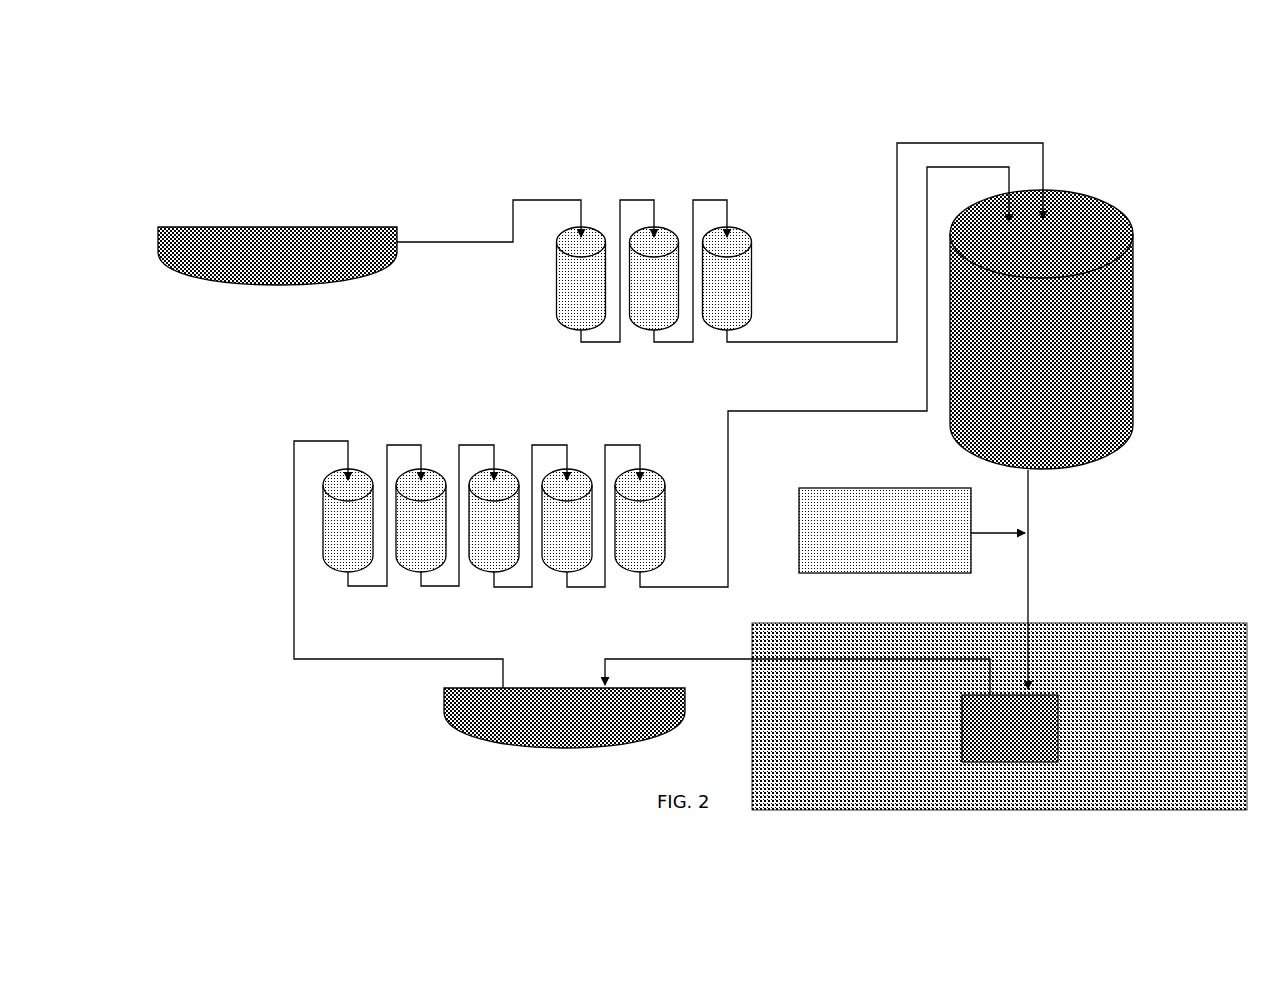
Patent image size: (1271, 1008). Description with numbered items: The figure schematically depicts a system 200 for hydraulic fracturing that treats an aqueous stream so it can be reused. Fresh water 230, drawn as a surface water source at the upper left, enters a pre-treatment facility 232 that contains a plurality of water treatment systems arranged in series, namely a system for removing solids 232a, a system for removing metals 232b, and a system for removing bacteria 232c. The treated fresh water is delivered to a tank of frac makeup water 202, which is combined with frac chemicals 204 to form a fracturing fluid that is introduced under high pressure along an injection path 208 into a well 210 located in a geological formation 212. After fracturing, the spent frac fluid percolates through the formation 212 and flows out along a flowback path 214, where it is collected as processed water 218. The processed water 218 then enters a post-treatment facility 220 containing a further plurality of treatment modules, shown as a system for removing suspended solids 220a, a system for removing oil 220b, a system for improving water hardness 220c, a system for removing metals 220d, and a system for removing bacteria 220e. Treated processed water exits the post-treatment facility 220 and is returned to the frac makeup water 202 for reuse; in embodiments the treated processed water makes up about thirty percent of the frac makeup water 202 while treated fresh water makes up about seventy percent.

The system for hydraulic fracturing 200 is at (430, 92).
The fresh water 230 is at (277, 225).
The pre-treatment facility 232 is at (720, 259).
The system for removing solids 232a is at (583, 301).
The system for removing metals 232b is at (657, 307).
The system for removing bacteria 232c is at (733, 299).
The frac makeup water 202 is at (1077, 329).
The post-treatment facility 220 is at (651, 427).
The system for removing suspended solids 220a is at (355, 554).
The system for removing oil 220b is at (428, 544).
The system for improving water hardness 220c is at (503, 554).
The system for removing metals 220d is at (565, 541).
The system for removing bacteria 220e is at (642, 553).
The frac chemicals 204 is at (912, 511).
The injection path 208 is at (1065, 579).
The geological formation 212 is at (999, 716).
The well 210 is at (1010, 728).
The flowback path 214 is at (797, 660).
The processed water 218 is at (564, 738).